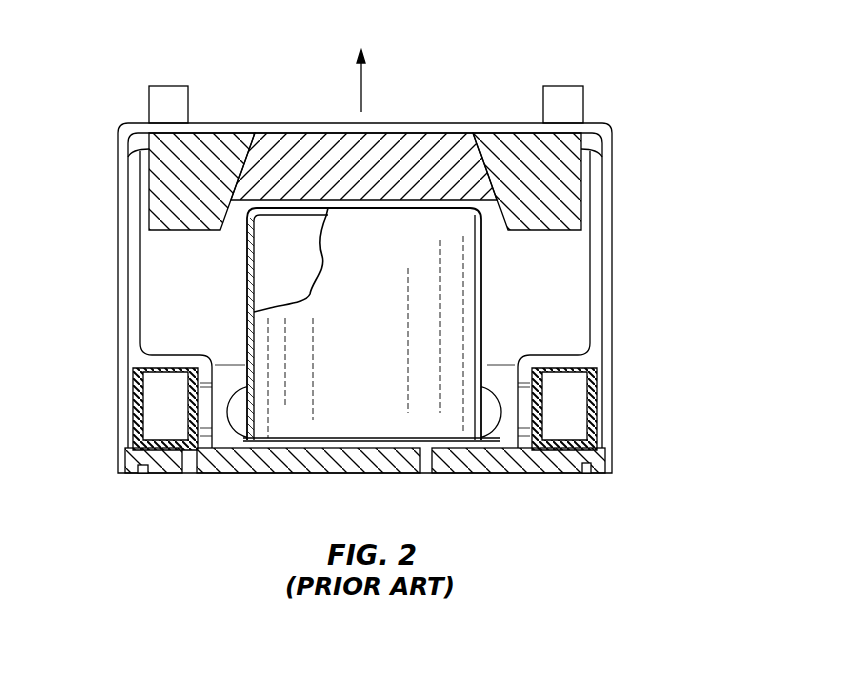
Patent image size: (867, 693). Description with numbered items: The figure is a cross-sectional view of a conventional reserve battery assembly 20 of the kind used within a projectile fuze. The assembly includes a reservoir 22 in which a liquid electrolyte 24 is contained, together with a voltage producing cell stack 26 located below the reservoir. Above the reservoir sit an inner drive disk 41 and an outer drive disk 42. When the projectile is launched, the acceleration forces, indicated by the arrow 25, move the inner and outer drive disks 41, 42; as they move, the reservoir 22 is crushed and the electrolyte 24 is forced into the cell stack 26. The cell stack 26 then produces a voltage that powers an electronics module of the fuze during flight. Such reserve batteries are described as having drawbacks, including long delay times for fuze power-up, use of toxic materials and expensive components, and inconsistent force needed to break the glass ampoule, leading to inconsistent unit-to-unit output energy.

The reserve battery assembly 20 is at (640, 100).
The reservoir 22 is at (480, 315).
The liquid electrolyte 24 is at (275, 268).
The arrow 25 is at (366, 72).
The voltage producing cell stack 26 is at (133, 402).
The inner drive disk 41 is at (418, 150).
The outer drive disk 42 is at (177, 152).